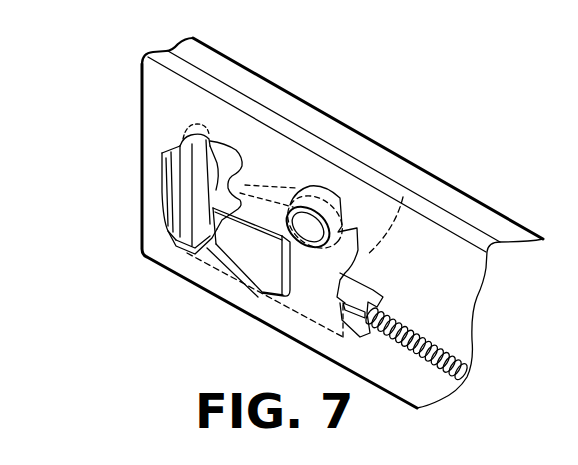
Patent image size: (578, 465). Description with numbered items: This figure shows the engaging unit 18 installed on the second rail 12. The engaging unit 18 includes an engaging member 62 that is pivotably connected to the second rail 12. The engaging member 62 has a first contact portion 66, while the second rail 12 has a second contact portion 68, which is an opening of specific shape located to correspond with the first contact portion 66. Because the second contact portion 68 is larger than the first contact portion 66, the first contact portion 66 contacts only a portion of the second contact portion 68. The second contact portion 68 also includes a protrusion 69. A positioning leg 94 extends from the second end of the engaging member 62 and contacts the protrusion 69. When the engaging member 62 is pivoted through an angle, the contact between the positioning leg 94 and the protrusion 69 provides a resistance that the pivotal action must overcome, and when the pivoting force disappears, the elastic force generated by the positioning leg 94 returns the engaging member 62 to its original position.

The second rail 12 is at (348, 158).
The engaging unit 18 is at (269, 168).
The engaging member 62 is at (403, 197).
The first contact portion 66 is at (258, 258).
The second contact portion 68 is at (220, 170).
The protrusion 69 is at (165, 152).
The positioning leg 94 is at (188, 182).